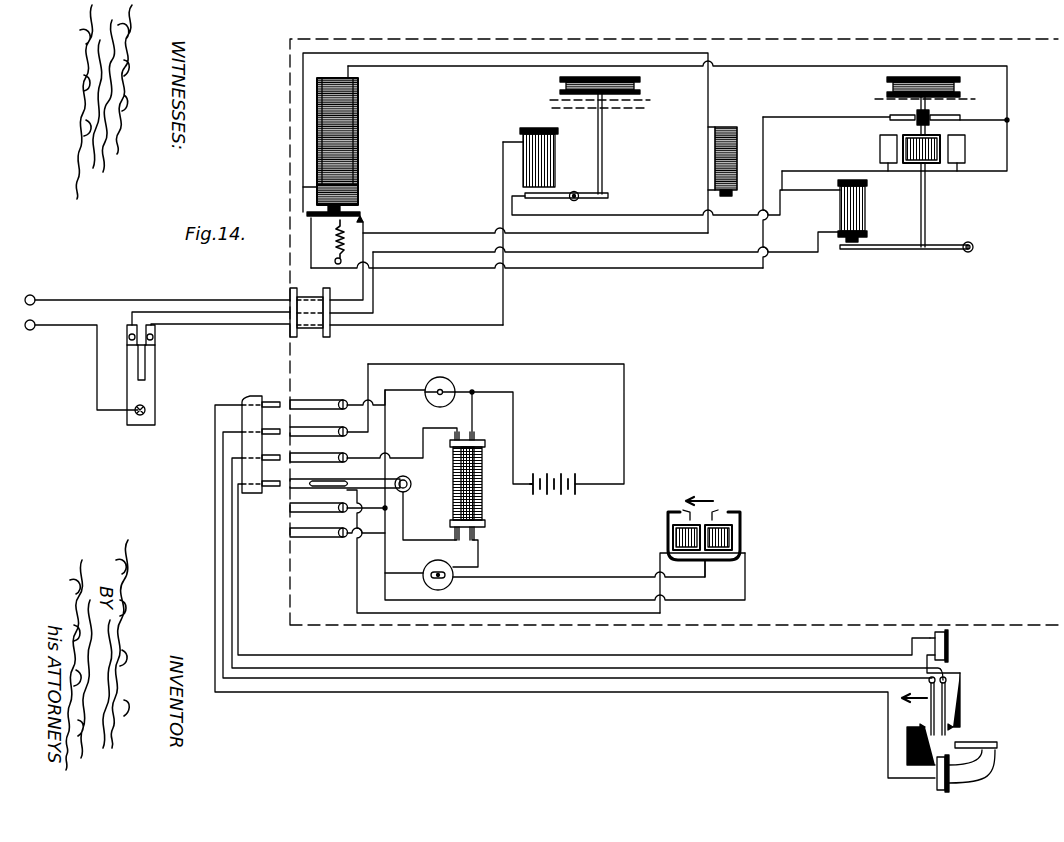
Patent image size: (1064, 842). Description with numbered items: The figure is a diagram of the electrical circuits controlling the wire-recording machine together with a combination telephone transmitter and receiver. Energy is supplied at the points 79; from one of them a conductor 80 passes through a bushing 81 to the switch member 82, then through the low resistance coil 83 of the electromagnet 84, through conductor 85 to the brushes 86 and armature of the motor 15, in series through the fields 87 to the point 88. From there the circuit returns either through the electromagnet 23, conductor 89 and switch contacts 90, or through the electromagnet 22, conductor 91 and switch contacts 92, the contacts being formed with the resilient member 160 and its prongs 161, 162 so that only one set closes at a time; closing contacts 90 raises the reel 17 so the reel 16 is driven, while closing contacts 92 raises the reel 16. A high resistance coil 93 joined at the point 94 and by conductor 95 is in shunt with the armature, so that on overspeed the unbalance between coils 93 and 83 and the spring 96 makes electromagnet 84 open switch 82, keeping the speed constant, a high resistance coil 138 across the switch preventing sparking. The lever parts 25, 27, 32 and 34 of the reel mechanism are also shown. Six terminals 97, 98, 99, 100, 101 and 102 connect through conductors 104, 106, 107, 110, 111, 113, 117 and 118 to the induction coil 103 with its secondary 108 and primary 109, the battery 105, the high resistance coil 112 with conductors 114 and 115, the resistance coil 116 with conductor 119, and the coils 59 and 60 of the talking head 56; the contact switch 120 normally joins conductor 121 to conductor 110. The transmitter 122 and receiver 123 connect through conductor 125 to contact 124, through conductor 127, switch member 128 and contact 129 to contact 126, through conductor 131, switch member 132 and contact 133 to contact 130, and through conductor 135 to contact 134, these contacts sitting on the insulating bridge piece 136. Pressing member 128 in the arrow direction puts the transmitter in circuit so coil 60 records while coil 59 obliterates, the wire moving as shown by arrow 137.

The motor 15 is at (935, 160).
The reel 16 is at (586, 82).
The reel 17 is at (926, 80).
The electromagnet 22 is at (556, 168).
The electromagnet 23 is at (867, 212).
The lever 25 is at (608, 196).
The rod 27 is at (603, 130).
The lever bar 32 is at (912, 250).
The rod 34 is at (927, 223).
The talking head 56 is at (703, 522).
The coil 59 is at (732, 540).
The coil 60 is at (682, 538).
The points 79 is at (35, 297).
The conductor 80 is at (197, 300).
The bushing 81 is at (315, 328).
The switch member 82 is at (360, 214).
The coil 83 is at (360, 190).
The electromagnet 84 is at (333, 208).
The conductor 85 is at (572, 268).
The brushes 86 is at (890, 116).
The fields 87 is at (880, 148).
The point 88 is at (780, 190).
The conductor 89 is at (648, 252).
The switch contacts 90 is at (130, 340).
The conductor 91 is at (472, 325).
The switch contacts 92 is at (155, 341).
The high resistance coil 93 is at (360, 103).
The point 94 is at (317, 187).
The conductor 95 is at (752, 70).
The spring 96 is at (338, 258).
The terminal 97 is at (319, 455).
The terminal 98 is at (330, 431).
The terminal 99 is at (322, 458).
The terminal 100 is at (294, 490).
The terminal 101 is at (294, 514).
The terminal 102 is at (294, 539).
The induction coil 103 is at (462, 494).
The conductor 104 is at (390, 404).
The battery 105 is at (552, 490).
The conductor 106 is at (596, 366).
The conductor 107 is at (450, 443).
The secondary 108 is at (485, 524).
The primary 109 is at (485, 444).
The conductor 110 is at (368, 600).
The conductor 111 is at (748, 584).
The high resistance coil 112 is at (428, 382).
The conductor 113 is at (388, 445).
The conductor 114 is at (473, 412).
The conductor 115 is at (513, 465).
The resistance coil 116 is at (452, 585).
The conductor 117 is at (503, 551).
The conductor 118 is at (582, 577).
The conductor 119 is at (483, 558).
The contact switch 120 is at (372, 480).
The conductor 121 is at (418, 540).
The transmitter 122 is at (1000, 752).
The receiver 123 is at (948, 650).
The contact 124 is at (268, 491).
The conductor 125 is at (298, 655).
The contact 126 is at (238, 487).
The conductor 127 is at (370, 668).
The switch member 128 is at (945, 710).
The contact 129 is at (960, 733).
The contact 130 is at (245, 420).
The conductor 131 is at (300, 678).
The switch member 132 is at (910, 706).
The contact 133 is at (920, 728).
The contact 134 is at (270, 400).
The conductor 135 is at (480, 692).
The insulating bridge piece 136 is at (238, 468).
The arrow 137 is at (702, 496).
The high resistance coil 138 is at (737, 130).
The resilient member 160 is at (150, 413).
The resilient prong 161 is at (130, 387).
The resilient prong 162 is at (155, 372).